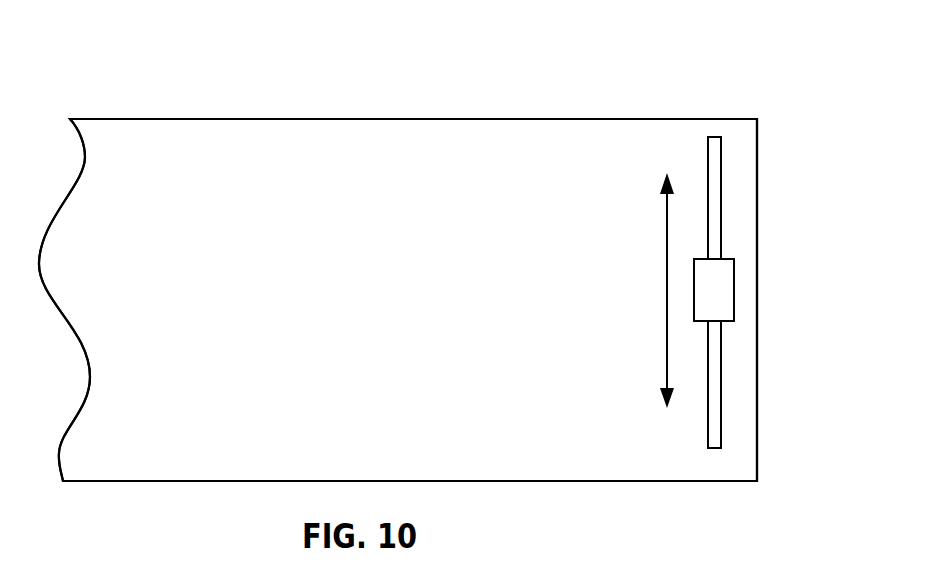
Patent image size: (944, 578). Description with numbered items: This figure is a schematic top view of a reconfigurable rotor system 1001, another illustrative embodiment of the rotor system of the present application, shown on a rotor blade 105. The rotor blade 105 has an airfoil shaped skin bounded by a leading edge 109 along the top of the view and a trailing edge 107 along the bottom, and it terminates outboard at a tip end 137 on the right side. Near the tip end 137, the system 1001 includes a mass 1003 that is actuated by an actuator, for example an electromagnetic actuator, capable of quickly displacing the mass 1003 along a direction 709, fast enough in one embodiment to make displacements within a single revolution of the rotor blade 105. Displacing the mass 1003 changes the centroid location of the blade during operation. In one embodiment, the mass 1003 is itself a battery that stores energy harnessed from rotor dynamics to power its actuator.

The reconfigurable rotor system 1001 is at (337, 92).
The rotor blade 105 is at (196, 119).
The leading edge 109 is at (510, 109).
The trailing edge 107 is at (667, 493).
The tip end 137 is at (768, 139).
The mass 1003 is at (736, 313).
The direction 709 is at (665, 282).